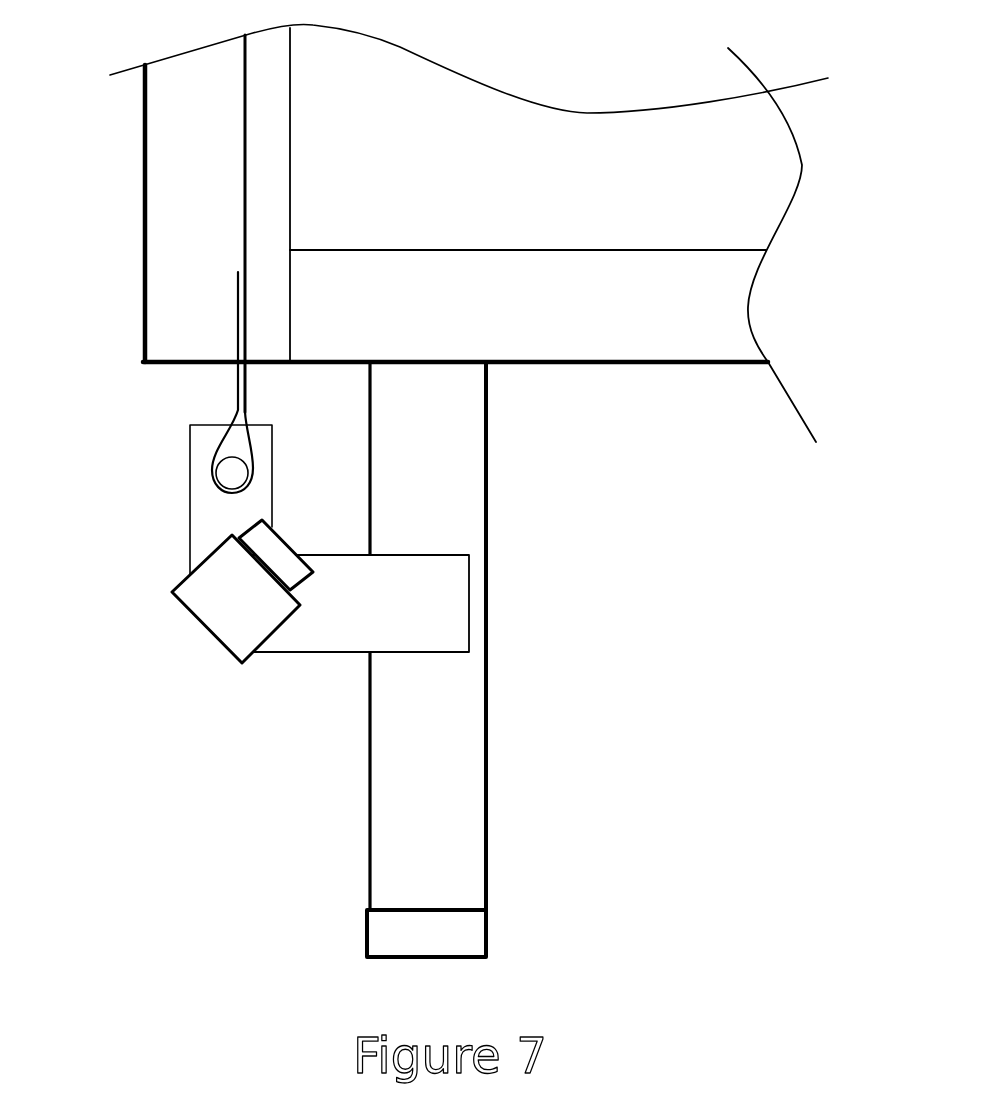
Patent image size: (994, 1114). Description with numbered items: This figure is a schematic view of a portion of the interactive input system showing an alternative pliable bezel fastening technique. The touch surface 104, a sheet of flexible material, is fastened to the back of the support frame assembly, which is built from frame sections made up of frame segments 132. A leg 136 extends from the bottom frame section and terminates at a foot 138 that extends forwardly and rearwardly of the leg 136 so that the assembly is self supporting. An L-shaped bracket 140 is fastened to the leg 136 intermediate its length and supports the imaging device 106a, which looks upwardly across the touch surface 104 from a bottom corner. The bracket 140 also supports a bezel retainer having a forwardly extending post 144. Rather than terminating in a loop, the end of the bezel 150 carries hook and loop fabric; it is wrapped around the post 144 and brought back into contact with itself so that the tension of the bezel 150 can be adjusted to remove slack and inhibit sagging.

The touch surface 104 is at (452, 204).
The frame segment 132 is at (528, 270).
The bezel 150 is at (246, 132).
The leg 136 is at (450, 449).
The foot 138 is at (448, 932).
The L-shaped bracket 140 is at (438, 597).
The post 144 is at (225, 475).
The imaging device 106a is at (230, 610).